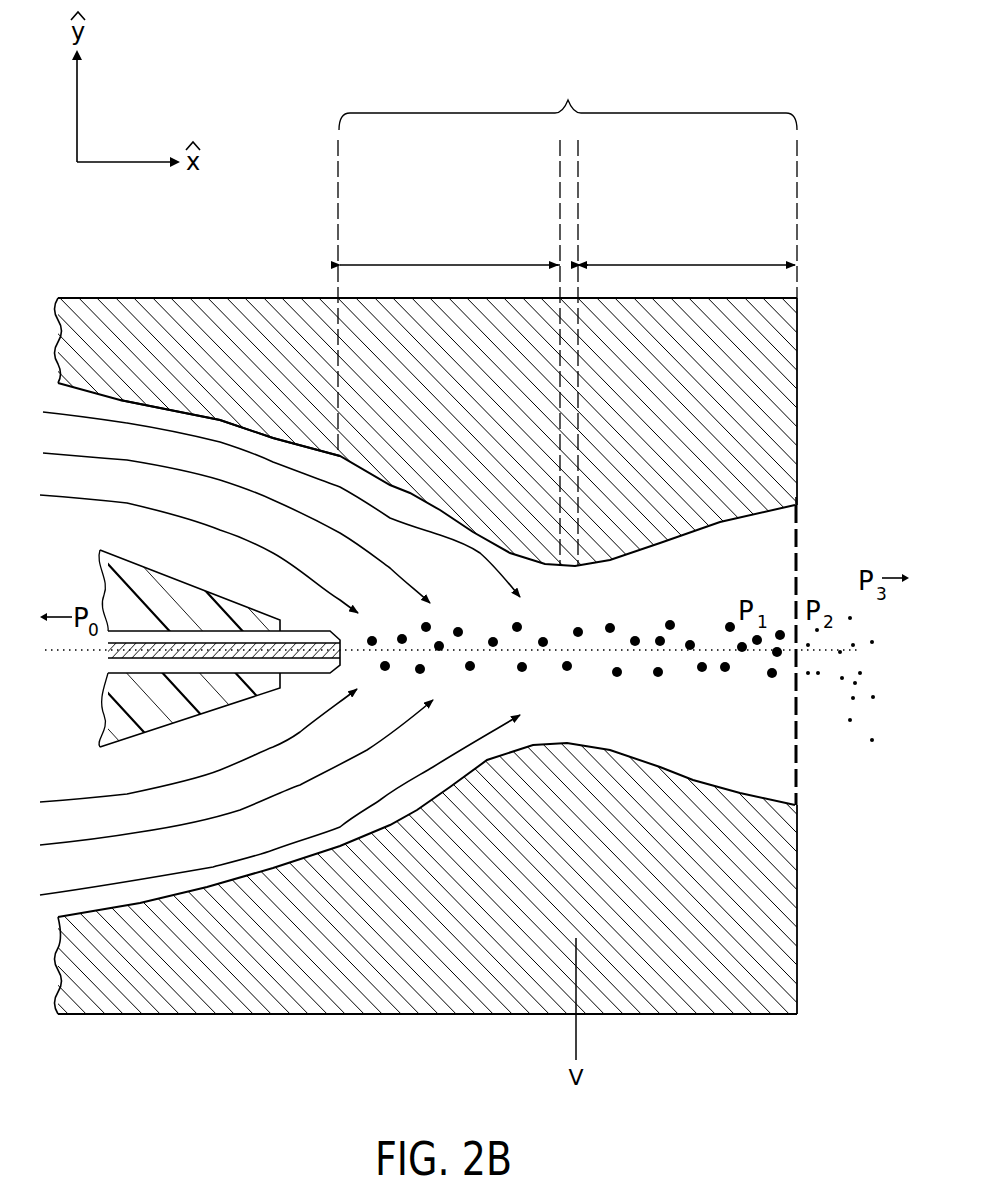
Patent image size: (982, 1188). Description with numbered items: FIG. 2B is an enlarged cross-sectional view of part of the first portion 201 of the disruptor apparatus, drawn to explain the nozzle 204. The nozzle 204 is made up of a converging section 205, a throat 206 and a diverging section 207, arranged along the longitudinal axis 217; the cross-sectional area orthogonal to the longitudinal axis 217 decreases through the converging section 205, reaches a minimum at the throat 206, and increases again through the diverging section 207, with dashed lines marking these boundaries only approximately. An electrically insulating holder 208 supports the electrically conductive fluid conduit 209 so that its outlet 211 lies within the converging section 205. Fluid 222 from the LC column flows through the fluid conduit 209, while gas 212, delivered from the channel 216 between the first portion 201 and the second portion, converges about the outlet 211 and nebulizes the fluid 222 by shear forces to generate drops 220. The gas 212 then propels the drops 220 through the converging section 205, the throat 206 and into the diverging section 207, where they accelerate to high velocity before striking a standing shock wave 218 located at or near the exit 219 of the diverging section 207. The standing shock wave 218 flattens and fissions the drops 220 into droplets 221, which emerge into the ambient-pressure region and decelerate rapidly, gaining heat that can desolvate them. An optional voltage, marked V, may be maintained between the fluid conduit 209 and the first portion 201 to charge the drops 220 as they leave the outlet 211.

The first portion 201 is at (284, 176).
The nozzle 204 is at (568, 103).
The converging section 205 is at (452, 263).
The throat 206 is at (568, 262).
The diverging section 207 is at (697, 264).
The holder 208 is at (126, 576).
The fluid conduit 209 is at (253, 631).
The outlet 211 is at (342, 655).
The gas 212 is at (392, 517).
The channel 216 is at (220, 435).
The longitudinal axis 217 is at (80, 655).
The standing shock wave 218 is at (797, 562).
The exit 219 is at (815, 533).
The drops 220 is at (702, 667).
The droplets 221 is at (828, 690).
The fluid 222 is at (253, 673).